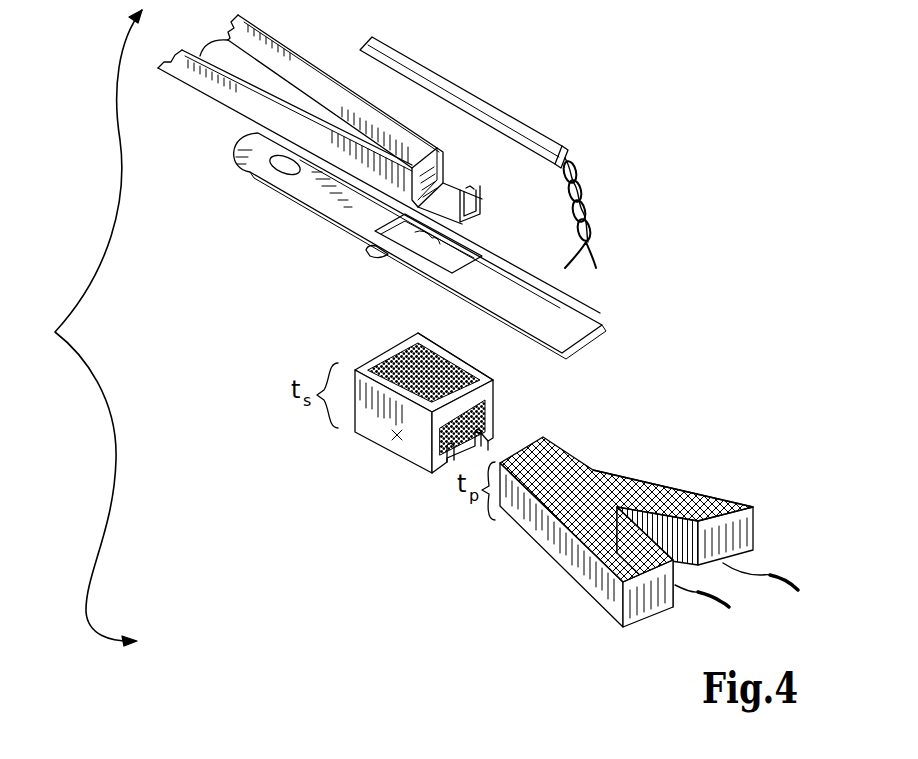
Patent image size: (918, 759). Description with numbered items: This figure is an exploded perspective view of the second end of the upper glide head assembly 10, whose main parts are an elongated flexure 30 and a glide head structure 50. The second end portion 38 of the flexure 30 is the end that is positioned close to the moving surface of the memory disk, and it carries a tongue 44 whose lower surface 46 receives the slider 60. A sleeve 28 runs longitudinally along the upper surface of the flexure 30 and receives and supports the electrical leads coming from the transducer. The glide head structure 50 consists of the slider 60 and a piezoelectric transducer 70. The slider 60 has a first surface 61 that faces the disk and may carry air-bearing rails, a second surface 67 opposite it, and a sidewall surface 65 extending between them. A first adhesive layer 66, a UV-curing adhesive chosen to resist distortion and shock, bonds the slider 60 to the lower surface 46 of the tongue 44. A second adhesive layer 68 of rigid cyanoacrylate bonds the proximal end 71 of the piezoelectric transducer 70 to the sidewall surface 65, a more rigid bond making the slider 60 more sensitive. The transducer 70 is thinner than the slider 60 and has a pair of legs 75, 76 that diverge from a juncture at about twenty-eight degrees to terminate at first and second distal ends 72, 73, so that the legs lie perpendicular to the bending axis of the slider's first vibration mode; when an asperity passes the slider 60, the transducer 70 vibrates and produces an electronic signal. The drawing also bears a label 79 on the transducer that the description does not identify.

The upper glide head assembly 10 is at (243, 296).
The sleeve 28 is at (483, 107).
The flexure 30 is at (235, 90).
The second end portion 38 is at (404, 146).
The tongue 44 is at (325, 196).
The lower surface 46 is at (388, 258).
The glide head structure 50 is at (688, 308).
The slider 60 is at (423, 437).
The first surface 61 is at (468, 450).
The sidewall surface 65 is at (462, 443).
The first adhesive layer 66 is at (467, 368).
The second surface 67 is at (368, 365).
The second adhesive layer 68 is at (475, 405).
The piezoelectric transducer 70 is at (663, 536).
The proximal end 71 is at (626, 493).
The first distal end 72 is at (648, 625).
The second distal end 73 is at (740, 528).
The leg 75 is at (595, 548).
The leg 76 is at (713, 490).
The hatched surface 79 is at (562, 455).